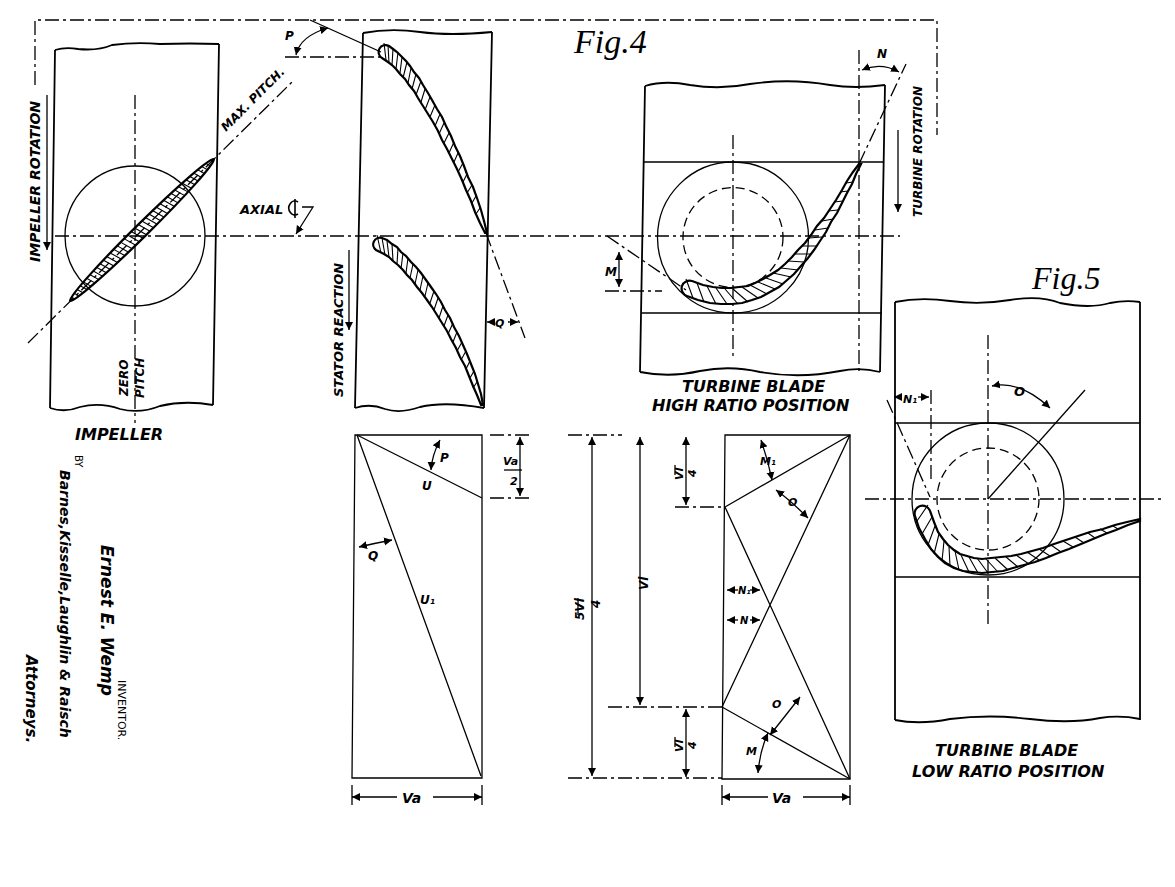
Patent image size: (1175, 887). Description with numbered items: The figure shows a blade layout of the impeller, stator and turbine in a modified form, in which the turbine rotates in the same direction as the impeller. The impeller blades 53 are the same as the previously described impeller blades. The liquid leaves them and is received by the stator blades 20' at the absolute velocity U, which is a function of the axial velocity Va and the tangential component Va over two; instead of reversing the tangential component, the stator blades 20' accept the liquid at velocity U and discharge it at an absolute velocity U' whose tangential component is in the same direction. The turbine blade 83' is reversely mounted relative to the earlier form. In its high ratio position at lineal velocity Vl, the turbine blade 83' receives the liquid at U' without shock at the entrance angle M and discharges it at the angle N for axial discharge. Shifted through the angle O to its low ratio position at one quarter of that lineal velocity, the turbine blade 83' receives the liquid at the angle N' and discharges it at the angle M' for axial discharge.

In FIG. 4, the impeller blade 53 is at (117, 265).
In FIG. 4, the stator reaction blade 20' is at (430, 224).
In FIG. 4, the turbine blade 83' is at (771, 257).
In FIG. 5, the turbine blade 83' is at (1027, 589).